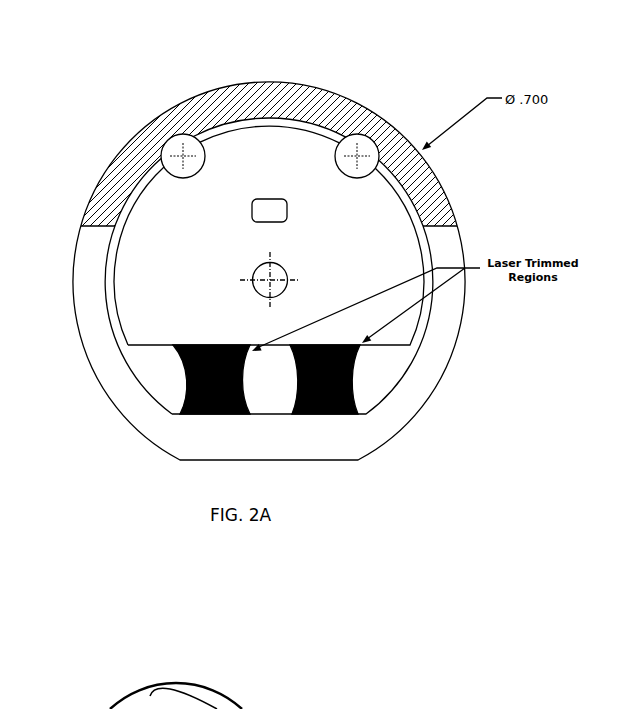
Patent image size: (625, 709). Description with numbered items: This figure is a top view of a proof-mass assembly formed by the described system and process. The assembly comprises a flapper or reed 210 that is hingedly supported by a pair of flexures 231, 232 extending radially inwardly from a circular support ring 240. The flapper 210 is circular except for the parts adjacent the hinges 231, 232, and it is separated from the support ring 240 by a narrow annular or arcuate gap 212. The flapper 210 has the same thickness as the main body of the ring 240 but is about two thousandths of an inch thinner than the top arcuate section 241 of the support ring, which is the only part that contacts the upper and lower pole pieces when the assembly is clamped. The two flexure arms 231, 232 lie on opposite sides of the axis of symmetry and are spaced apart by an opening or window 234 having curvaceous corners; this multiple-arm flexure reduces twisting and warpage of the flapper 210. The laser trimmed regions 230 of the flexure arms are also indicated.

The flapper 210 is at (189, 270).
The gap 212 is at (116, 244).
The laser trimmed resistor region 230 is at (352, 388).
The flexure arm 231 is at (218, 415).
The flexure arm 232 is at (309, 414).
The window 234 is at (274, 385).
The support ring 240 is at (99, 308).
The top arcuate section of the support ring 241 is at (318, 103).